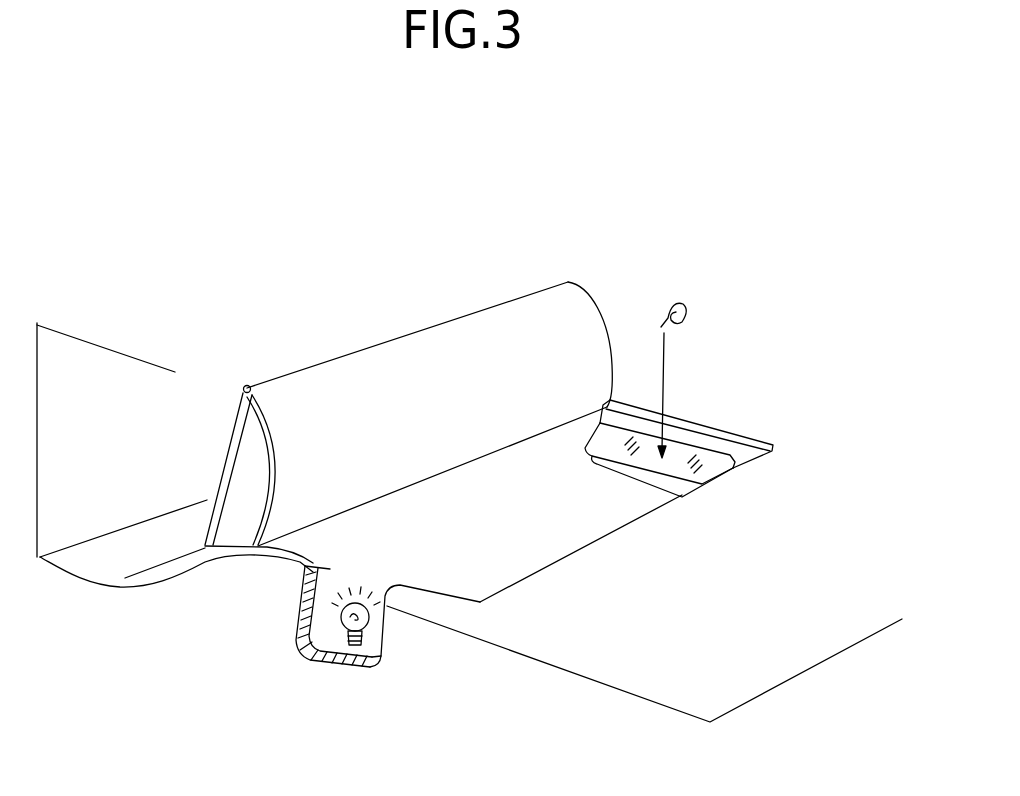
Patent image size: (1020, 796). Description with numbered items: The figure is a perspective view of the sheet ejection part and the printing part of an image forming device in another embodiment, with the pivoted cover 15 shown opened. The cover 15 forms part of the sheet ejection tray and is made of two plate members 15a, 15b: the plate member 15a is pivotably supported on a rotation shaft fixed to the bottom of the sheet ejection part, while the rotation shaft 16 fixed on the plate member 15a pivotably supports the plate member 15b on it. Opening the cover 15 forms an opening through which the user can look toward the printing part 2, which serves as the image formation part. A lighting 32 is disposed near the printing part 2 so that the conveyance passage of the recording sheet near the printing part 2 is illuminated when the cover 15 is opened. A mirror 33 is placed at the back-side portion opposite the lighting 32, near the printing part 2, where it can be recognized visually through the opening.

The printing part 2 is at (448, 537).
The pivoted cover 15 is at (359, 351).
The plate member 15a is at (227, 473).
The plate member 15b is at (428, 380).
The rotation shaft 16 is at (244, 386).
The lighting 32 is at (347, 622).
The mirror 33 is at (683, 452).